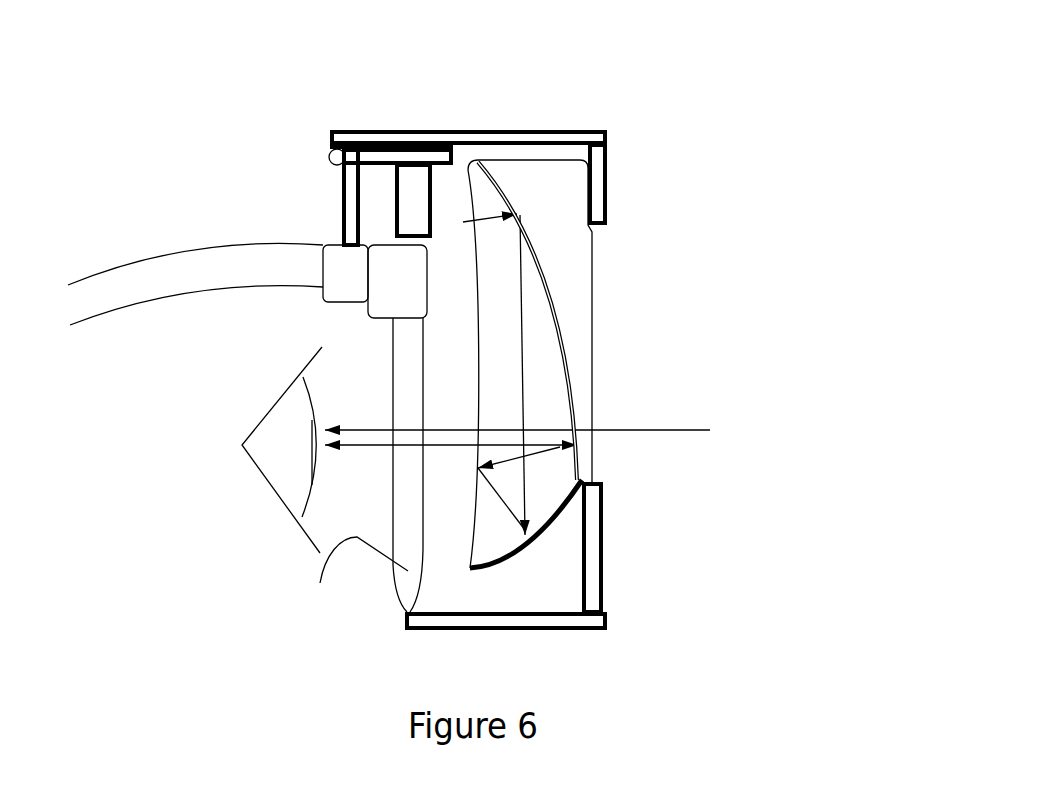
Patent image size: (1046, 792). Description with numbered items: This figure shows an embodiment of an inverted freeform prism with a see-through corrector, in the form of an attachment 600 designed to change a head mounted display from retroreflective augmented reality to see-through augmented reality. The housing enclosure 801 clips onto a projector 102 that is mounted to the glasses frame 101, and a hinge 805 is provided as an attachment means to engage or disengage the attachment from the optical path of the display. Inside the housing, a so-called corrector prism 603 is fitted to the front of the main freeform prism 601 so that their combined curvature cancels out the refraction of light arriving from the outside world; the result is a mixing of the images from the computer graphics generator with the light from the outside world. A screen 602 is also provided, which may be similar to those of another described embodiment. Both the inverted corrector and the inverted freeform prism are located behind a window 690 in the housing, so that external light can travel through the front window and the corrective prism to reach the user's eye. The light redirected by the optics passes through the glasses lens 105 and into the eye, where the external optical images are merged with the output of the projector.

The attachment 600 is at (418, 88).
The hinge 805 is at (331, 151).
The projector 102 is at (380, 222).
The main freeform prism 601 is at (498, 192).
The corrector prism 603 is at (575, 293).
The window 690 is at (652, 327).
The screen 602 is at (532, 540).
The housing enclosure 801 is at (610, 628).
The glasses lens 105 is at (354, 480).
The glasses frame 101 is at (260, 292).